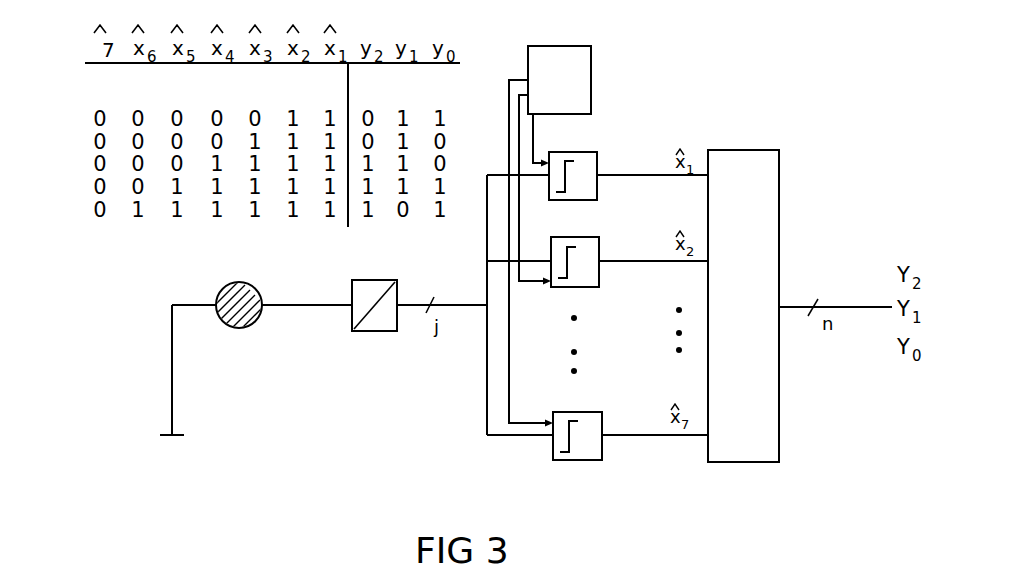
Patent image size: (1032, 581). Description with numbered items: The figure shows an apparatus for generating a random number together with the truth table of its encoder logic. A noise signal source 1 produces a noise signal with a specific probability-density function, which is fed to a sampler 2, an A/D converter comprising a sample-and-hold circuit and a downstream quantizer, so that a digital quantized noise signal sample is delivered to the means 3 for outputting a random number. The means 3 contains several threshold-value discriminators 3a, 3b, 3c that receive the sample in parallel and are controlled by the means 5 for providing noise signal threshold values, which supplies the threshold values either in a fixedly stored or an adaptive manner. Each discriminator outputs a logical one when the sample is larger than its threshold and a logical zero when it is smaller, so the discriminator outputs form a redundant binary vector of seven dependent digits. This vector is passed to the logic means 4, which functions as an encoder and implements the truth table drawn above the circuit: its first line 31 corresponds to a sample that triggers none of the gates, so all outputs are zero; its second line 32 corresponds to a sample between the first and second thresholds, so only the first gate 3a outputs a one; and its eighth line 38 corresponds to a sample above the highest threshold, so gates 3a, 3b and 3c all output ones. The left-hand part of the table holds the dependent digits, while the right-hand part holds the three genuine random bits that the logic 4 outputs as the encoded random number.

The noise signal source 1 is at (247, 289).
The sampler 2 is at (370, 280).
The means for outputting a random number 3 is at (601, 276).
The first threshold-value discriminator 3a is at (561, 152).
The second threshold-value discriminator 3b is at (598, 237).
The seventh threshold-value discriminator 3c is at (600, 412).
The logic means 4 is at (737, 150).
The means for providing noise signal threshold values 5 is at (591, 80).
The first line of the truth table 31 is at (85, 63).
The second line of the truth table 32 is at (96, 91).
The eighth line of the truth table 38 is at (96, 233).